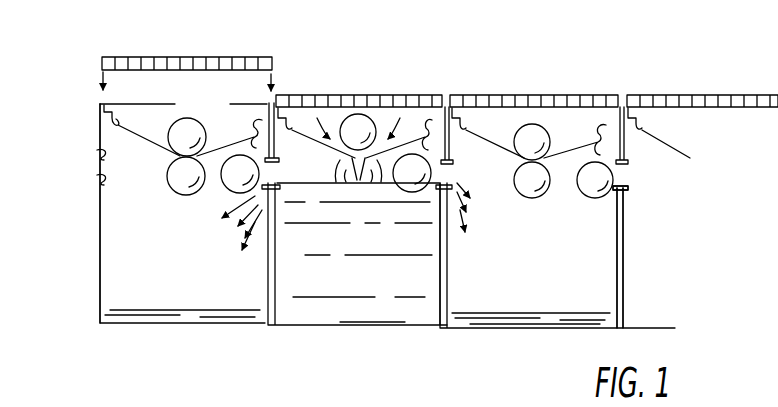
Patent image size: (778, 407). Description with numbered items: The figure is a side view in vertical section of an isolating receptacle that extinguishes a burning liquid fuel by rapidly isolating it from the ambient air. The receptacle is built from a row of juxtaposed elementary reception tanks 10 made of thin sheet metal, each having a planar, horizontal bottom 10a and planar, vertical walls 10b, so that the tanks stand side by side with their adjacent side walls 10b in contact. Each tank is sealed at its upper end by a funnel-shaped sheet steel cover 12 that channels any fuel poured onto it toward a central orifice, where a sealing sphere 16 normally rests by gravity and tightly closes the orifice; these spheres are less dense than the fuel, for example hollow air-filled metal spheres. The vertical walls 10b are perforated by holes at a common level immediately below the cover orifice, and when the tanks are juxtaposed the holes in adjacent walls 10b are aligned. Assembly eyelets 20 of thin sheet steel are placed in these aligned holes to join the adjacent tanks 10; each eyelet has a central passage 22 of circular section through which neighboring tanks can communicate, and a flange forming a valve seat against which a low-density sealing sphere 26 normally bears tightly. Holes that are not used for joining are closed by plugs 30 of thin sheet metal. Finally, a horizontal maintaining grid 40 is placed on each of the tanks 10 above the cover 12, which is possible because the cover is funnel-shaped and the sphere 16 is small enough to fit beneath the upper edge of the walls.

The elementary reception tank 10 is at (208, 328).
The bottom 10a is at (288, 328).
The vertical wall 10b is at (97, 282).
The cover 12 is at (306, 133).
The sealing sphere 16 is at (534, 122).
The assembly eyelet 20 is at (637, 194).
The central passage 22 is at (620, 185).
The sealing sphere 26 is at (222, 192).
The plug 30 is at (90, 172).
The horizontal maintaining grid 40 is at (190, 57).